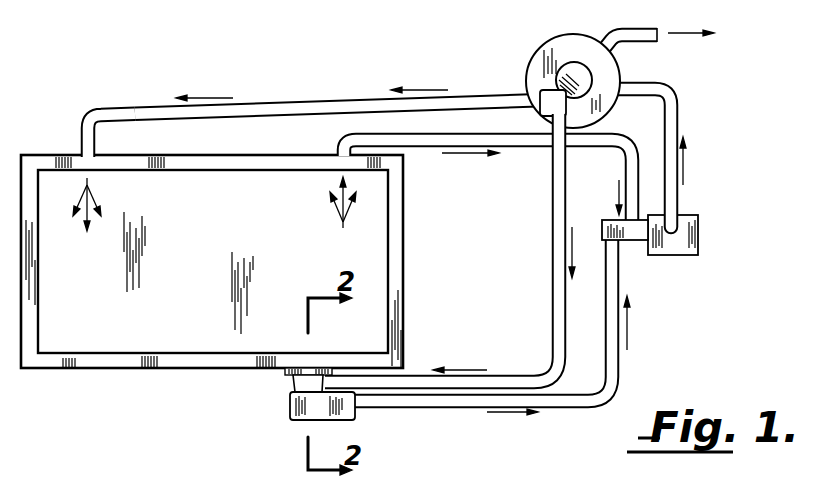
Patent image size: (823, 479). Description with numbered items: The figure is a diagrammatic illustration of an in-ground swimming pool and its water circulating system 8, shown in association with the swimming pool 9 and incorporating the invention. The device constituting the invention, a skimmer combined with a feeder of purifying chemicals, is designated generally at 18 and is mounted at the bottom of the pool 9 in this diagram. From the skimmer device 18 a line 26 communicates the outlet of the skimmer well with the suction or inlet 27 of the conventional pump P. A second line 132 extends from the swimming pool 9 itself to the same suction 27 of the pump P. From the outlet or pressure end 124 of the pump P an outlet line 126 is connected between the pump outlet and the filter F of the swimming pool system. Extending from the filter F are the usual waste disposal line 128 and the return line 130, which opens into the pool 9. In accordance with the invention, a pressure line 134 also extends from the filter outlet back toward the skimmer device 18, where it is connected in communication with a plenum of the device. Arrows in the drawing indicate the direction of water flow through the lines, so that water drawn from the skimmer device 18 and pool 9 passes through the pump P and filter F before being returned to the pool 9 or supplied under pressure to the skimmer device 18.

The water circulating system 8 is at (115, 104).
The swimming pool 9 is at (99, 375).
The skimmer device 18 is at (274, 405).
The line 26 is at (472, 408).
The suction or inlet 27 is at (630, 243).
The outlet or pressure end 124 is at (705, 232).
The outlet line 126 is at (677, 107).
The waste disposal line 128 is at (627, 46).
The return line 130 is at (272, 92).
The line 132 is at (488, 181).
The pressure line 134 is at (500, 376).
The filter F is at (532, 62).
The pump P is at (699, 246).